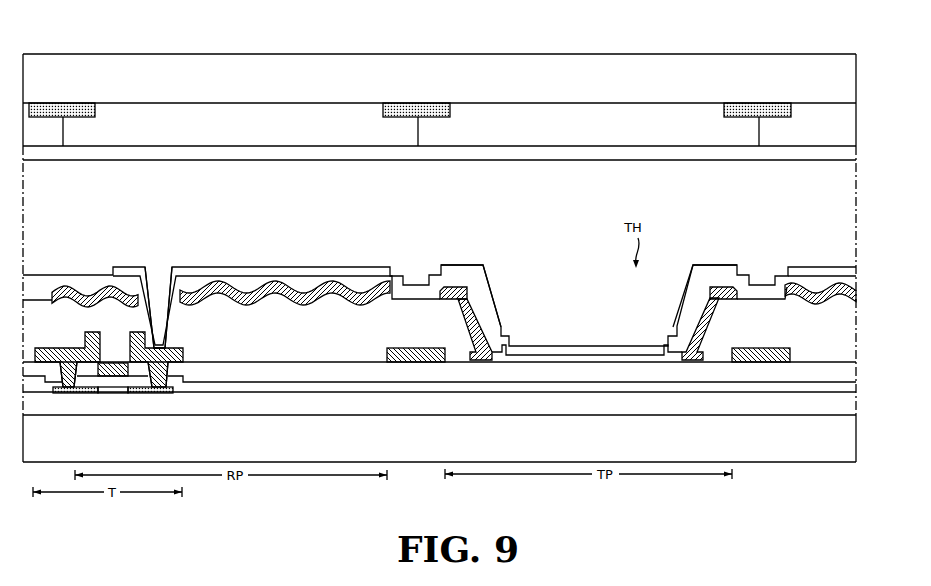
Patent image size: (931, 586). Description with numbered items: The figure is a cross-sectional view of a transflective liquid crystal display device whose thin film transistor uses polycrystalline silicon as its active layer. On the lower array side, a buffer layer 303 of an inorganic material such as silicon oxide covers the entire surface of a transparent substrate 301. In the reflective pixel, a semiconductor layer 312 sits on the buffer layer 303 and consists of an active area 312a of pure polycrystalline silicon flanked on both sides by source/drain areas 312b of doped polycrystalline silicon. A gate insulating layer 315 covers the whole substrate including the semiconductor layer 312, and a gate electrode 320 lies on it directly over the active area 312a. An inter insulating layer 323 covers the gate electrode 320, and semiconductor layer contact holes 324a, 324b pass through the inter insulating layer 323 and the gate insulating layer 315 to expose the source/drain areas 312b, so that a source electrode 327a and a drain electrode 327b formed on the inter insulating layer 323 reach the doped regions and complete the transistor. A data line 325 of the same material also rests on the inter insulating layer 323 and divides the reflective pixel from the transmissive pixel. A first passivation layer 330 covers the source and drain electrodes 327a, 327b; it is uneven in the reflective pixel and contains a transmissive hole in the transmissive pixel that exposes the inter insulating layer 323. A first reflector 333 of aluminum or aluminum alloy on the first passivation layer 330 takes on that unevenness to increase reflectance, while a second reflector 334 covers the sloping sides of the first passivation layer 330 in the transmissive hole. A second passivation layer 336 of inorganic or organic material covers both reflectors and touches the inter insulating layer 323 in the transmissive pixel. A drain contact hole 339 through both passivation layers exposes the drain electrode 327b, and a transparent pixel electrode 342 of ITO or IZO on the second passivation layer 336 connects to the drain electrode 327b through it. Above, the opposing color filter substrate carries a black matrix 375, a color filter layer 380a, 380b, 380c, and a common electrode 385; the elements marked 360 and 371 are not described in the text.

The transparent substrate 301 is at (405, 444).
The buffer layer 303 is at (641, 415).
The semiconductor layer 312 is at (119, 425).
The active area 312a is at (83, 428).
The source/drain areas 312b is at (85, 395).
The gate insulating layer 315 is at (233, 395).
The gate electrode 320 is at (110, 380).
The inter insulating layer 323 is at (110, 357).
The semiconductor layer contact hole 324a is at (59, 392).
The semiconductor layer contact hole 324b is at (172, 392).
The data line 325 is at (412, 347).
The source electrode 327a is at (68, 348).
The drain electrode 327b is at (172, 348).
The first passivation layer 330 is at (440, 279).
The first reflector 333 is at (92, 295).
The second reflector 334 is at (462, 278).
The second passivation layer 336 is at (66, 285).
The drain contact hole 339 is at (157, 270).
The pixel electrode 342 is at (182, 266).
The array substrate 360 is at (847, 200).
The second substrate 371 is at (473, 75).
The black matrix 375 is at (80, 110).
The color filter layer 380a is at (212, 128).
The color filter layer 380b is at (526, 128).
The color filter layer 380c is at (53, 128).
The common electrode 385 is at (678, 148).